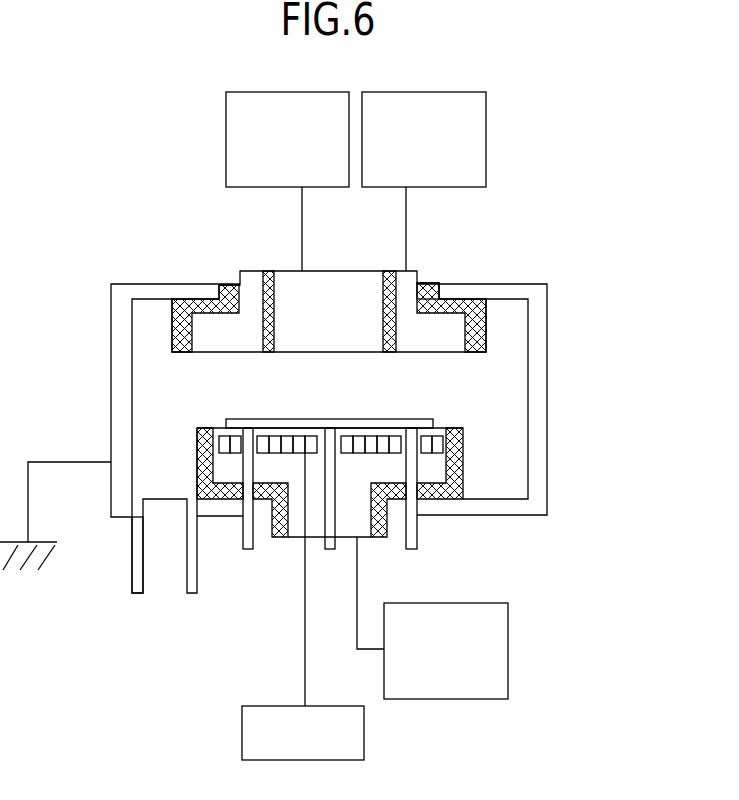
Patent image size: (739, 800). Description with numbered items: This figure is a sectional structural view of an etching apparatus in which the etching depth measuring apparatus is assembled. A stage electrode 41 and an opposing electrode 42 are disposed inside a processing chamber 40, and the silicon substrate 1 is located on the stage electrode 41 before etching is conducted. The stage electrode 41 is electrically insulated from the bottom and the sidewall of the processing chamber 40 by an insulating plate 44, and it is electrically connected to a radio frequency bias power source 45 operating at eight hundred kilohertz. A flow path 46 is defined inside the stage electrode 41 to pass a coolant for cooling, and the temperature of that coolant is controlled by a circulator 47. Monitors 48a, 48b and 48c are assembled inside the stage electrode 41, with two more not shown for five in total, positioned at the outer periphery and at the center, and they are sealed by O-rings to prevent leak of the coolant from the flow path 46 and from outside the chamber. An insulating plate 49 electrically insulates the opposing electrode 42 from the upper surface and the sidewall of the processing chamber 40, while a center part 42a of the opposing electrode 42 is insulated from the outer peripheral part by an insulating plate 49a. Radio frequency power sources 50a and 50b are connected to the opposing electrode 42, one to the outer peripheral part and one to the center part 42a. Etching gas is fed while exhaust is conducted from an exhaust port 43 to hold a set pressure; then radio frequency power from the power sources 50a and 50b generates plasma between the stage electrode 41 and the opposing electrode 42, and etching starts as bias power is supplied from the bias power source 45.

The silicon substrate 1 is at (327, 420).
The processing chamber 40 is at (548, 297).
The stage electrode 41 is at (427, 470).
The opposing electrode 42 is at (452, 338).
The center part of the opposing electrode 42a is at (285, 268).
The exhaust port 43 is at (158, 568).
The insulating plate 44 is at (463, 447).
The radio frequency bias power source 45 is at (508, 650).
The flow path 46 is at (261, 432).
The circulator 47 is at (242, 733).
The monitor 48a is at (248, 552).
The monitor 48b is at (330, 552).
The monitor 48c is at (417, 545).
The insulating plate 49 is at (428, 288).
The insulating plate 49a is at (388, 264).
The radio frequency power source 50a is at (486, 140).
The radio frequency power source 50b is at (226, 140).